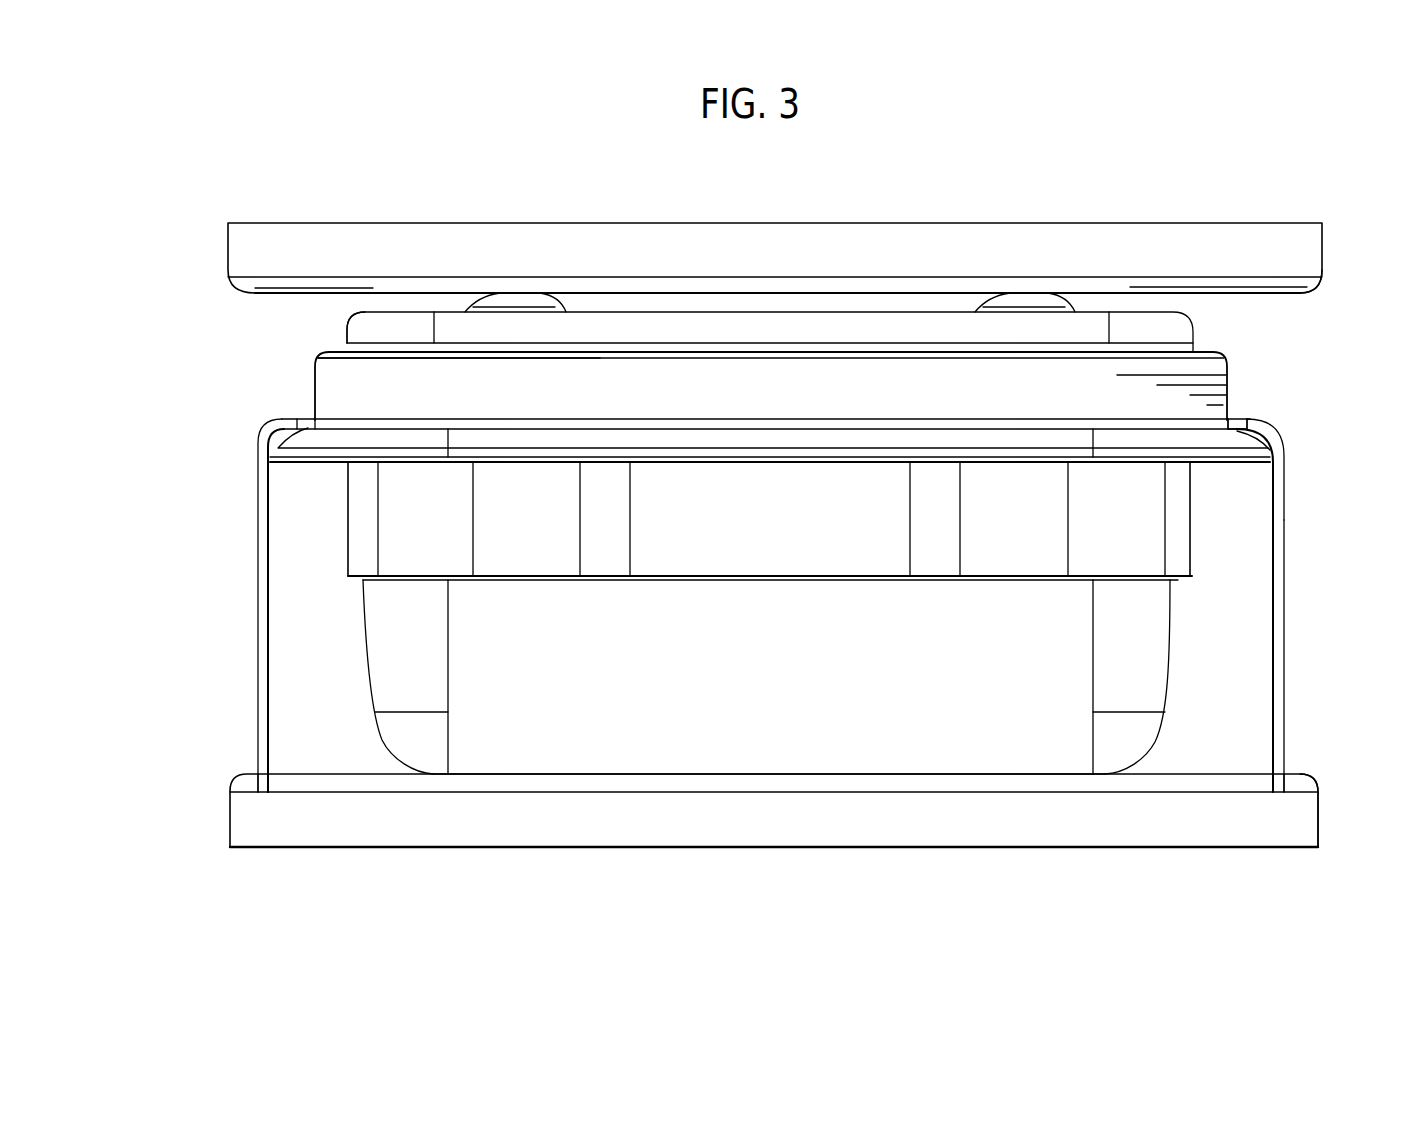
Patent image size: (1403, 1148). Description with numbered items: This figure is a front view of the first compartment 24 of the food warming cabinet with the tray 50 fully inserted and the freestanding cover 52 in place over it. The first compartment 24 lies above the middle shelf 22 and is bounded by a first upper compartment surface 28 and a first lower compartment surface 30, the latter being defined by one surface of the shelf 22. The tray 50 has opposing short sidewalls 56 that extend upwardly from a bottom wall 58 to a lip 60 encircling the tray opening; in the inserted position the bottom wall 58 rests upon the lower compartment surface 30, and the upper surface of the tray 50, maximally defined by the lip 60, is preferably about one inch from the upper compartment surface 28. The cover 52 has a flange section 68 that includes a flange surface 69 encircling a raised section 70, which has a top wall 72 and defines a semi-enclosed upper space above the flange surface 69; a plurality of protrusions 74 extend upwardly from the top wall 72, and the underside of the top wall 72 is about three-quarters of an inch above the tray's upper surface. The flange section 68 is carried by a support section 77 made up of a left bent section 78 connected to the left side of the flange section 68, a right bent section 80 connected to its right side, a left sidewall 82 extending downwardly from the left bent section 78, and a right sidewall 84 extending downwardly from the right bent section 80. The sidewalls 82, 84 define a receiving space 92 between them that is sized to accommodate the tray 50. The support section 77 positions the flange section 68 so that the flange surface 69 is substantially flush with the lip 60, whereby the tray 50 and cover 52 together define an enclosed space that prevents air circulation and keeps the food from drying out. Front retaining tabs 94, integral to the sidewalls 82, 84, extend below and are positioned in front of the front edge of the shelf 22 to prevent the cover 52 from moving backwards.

The middle shelf 22 is at (727, 848).
The first compartment 24 is at (311, 336).
The first upper compartment surface 28 is at (1292, 293).
The first lower compartment surface 30 is at (1233, 775).
The tray 50 is at (388, 742).
The freestanding cover 52 is at (1229, 388).
The short sidewalls 56 is at (780, 666).
The bottom wall 58 is at (567, 774).
The lip 60 is at (370, 428).
The flange section 68 is at (1195, 330).
The flange surface 69 is at (1205, 433).
The raised section 70 is at (345, 322).
The top wall 72 is at (553, 298).
The protrusions 74 is at (978, 300).
The support section 77 is at (259, 532).
The left bent section 78 is at (272, 423).
The right bent section 80 is at (1283, 427).
The left sidewall 82 is at (258, 627).
The right sidewall 84 is at (1283, 710).
The receiving space 92 is at (269, 708).
The front retaining tabs 94 is at (267, 793).